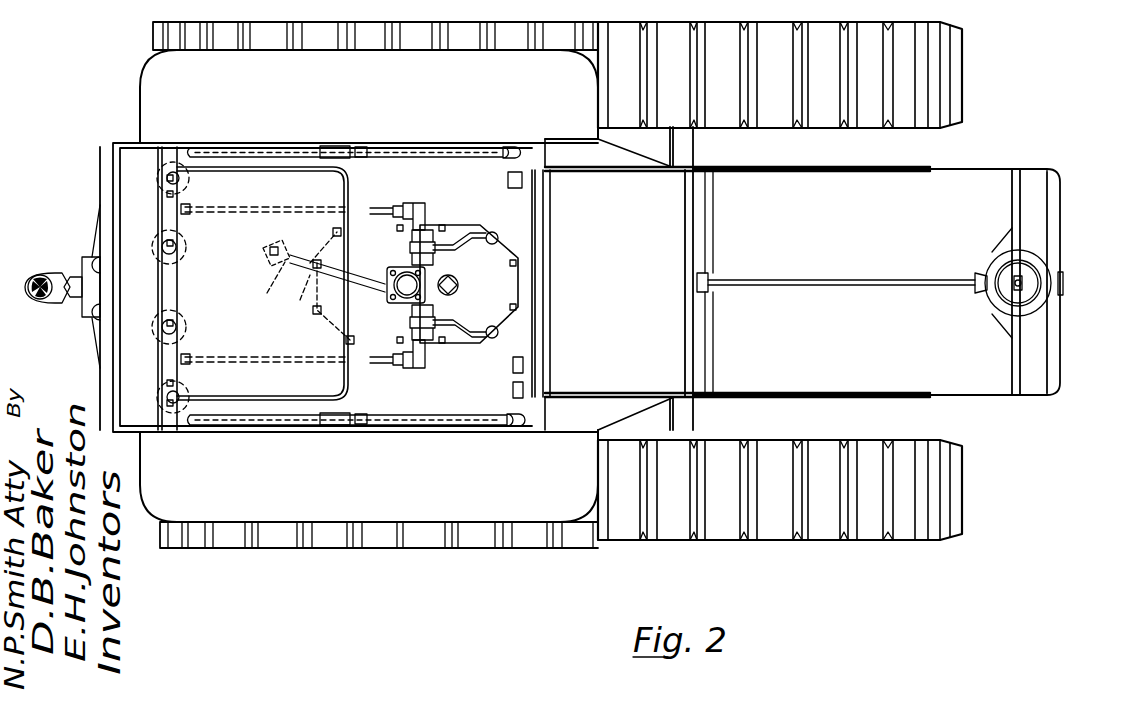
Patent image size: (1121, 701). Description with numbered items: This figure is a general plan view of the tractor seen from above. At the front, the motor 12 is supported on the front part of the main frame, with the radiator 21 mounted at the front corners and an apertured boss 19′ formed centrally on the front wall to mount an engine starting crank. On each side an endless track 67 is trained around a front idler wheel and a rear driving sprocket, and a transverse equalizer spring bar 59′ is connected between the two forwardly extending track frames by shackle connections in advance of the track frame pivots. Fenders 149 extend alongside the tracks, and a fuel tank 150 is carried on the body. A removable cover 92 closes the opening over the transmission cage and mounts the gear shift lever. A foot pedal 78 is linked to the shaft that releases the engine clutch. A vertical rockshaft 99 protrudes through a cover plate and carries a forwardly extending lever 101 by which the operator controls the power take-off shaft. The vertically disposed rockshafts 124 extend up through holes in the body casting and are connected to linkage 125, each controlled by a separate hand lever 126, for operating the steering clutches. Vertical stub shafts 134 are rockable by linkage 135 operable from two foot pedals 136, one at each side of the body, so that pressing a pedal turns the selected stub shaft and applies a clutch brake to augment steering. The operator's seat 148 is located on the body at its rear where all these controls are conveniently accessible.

The motor 12 is at (974, 385).
The apertured boss 19′ is at (1065, 279).
The radiator 21 is at (1040, 183).
The transverse equalizer spring bar 59′ is at (688, 146).
The endless track 67 is at (680, 530).
The foot pedal 78 is at (512, 365).
The cover 92 is at (450, 230).
The rockshaft 99 is at (276, 250).
The lever 101 is at (300, 310).
The rockshafts 124 is at (182, 313).
The linkage 125 is at (395, 222).
The hand lever 126 is at (480, 328).
The vertical stub shafts 134 is at (190, 183).
The linkage 135 is at (412, 150).
The foot pedals 136 is at (507, 180).
The operator's seat 148 is at (132, 167).
The fenders 149 is at (152, 93).
The fuel tank 150 is at (666, 392).